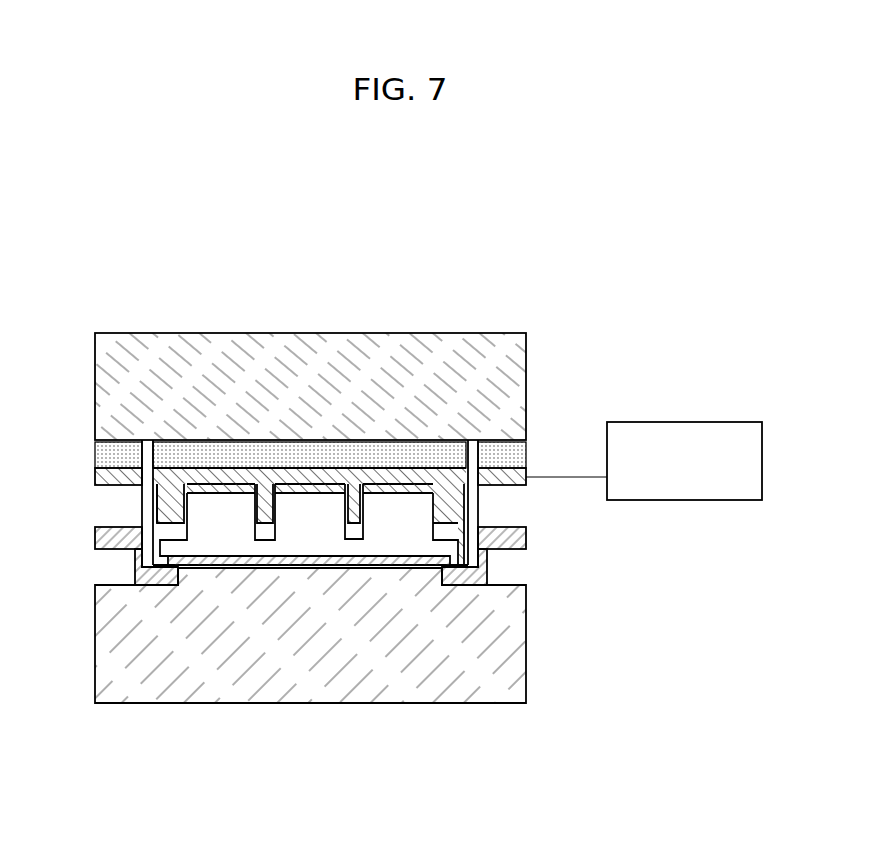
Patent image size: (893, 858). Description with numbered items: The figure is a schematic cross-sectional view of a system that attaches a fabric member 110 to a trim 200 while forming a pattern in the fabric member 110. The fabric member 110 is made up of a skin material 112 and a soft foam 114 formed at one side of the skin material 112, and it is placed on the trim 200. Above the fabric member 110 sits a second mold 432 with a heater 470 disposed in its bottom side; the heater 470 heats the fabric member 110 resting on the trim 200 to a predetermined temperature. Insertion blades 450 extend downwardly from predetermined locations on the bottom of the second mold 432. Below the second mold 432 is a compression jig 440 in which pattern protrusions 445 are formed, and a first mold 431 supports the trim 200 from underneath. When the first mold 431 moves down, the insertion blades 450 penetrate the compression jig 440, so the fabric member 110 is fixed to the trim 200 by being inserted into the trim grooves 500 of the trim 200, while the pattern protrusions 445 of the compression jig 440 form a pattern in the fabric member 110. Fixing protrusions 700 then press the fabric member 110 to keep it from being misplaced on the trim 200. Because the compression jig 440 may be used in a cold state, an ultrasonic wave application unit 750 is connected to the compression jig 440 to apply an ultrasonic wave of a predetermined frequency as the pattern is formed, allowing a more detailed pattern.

The fabric member 110 is at (385, 282).
The skin material 112 is at (388, 500).
The soft foam 114 is at (415, 507).
The trim 200 is at (525, 536).
The first mold 431 is at (110, 652).
The second mold 432 is at (105, 386).
The compression jig 440 is at (105, 478).
The pattern protrusions 445 is at (356, 492).
The insertion blades 450 is at (150, 512).
The heater 470 is at (112, 453).
The trim grooves 500 is at (475, 545).
The fixing protrusions 700 is at (175, 500).
The ultrasonic wave application unit 750 is at (707, 422).